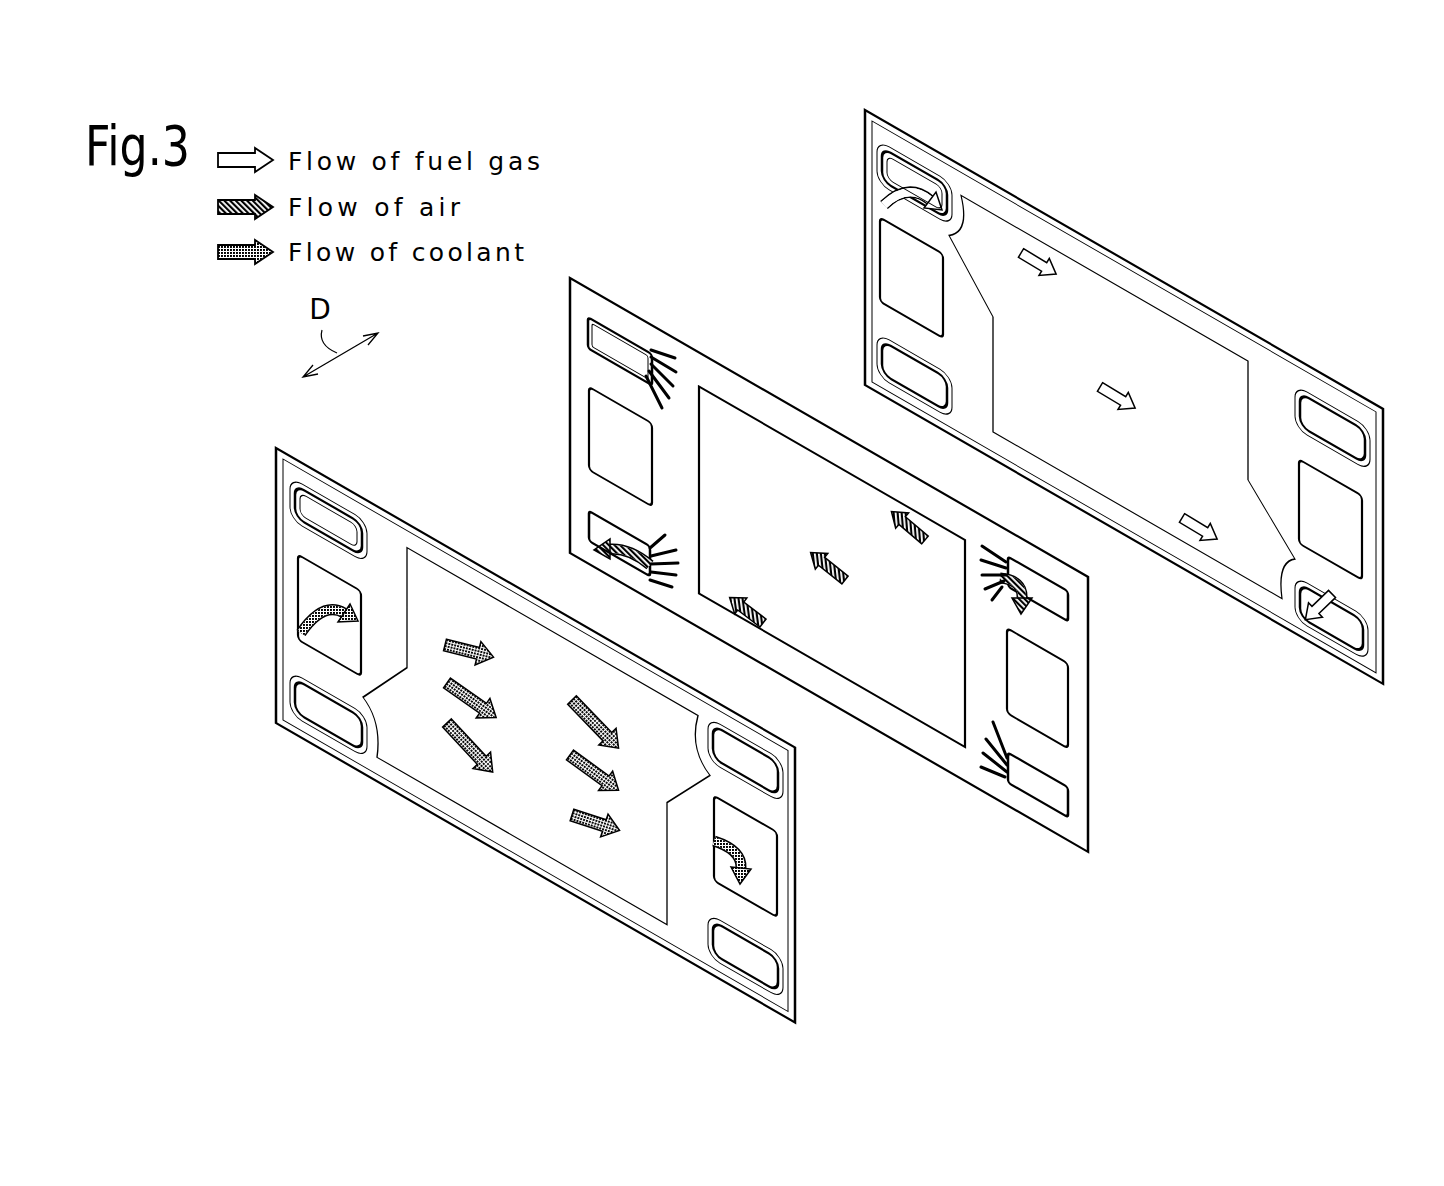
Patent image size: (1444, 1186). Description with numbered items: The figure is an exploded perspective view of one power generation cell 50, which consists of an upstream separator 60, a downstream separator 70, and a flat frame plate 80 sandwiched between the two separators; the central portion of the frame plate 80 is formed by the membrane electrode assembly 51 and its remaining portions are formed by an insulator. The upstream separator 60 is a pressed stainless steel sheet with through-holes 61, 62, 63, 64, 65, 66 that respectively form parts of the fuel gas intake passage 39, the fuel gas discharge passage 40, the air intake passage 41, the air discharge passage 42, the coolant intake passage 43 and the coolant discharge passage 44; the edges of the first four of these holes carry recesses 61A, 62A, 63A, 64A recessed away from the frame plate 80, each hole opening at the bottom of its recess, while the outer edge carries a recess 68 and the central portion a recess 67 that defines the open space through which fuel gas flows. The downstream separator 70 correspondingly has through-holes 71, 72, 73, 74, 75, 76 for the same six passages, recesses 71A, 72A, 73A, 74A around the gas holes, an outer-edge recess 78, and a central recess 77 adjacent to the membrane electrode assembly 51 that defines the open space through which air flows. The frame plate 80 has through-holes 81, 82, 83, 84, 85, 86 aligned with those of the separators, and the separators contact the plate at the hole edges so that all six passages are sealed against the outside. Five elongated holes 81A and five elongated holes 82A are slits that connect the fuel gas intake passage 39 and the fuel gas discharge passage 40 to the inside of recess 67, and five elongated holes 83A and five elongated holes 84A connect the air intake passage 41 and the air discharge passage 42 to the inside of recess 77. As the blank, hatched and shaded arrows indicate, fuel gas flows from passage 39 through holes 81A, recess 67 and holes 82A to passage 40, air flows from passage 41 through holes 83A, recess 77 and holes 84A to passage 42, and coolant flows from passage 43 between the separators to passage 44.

The power generation cell 50 is at (824, 564).
The upstream separator 60 is at (1117, 514).
The downstream separator 70 is at (675, 729).
The frame plate 80 is at (861, 609).
The membrane electrode assembly 51 is at (905, 700).
The fuel gas intake passage 39 is at (302, 506).
The coolant intake passage 43 is at (309, 575).
The air discharge passage 42 is at (343, 723).
The air intake passage 41 is at (766, 770).
The coolant discharge passage 44 is at (761, 840).
The fuel gas discharge passage 40 is at (740, 951).
The through-hole 61 is at (874, 166).
The recess 61A is at (880, 157).
The through-hole 62 is at (1369, 625).
The recess 62A is at (1368, 655).
The through-hole 63 is at (1316, 386).
The recess 63A is at (1291, 385).
The through-hole 64 is at (887, 376).
The recess 64A is at (881, 352).
The through-hole 65 is at (882, 277).
The through-hole 66 is at (1355, 548).
The recess 67 is at (1133, 315).
The recess 68 is at (1024, 206).
The through-hole 71 is at (287, 500).
The recess 71A is at (293, 493).
The through-hole 72 is at (785, 957).
The recess 72A is at (775, 985).
The through-hole 73 is at (742, 731).
The recess 73A is at (730, 718).
The through-hole 74 is at (285, 731).
The recess 74A is at (295, 693).
The through-hole 75 is at (297, 600).
The through-hole 76 is at (770, 880).
The recess 77 is at (520, 805).
The recess 78 is at (405, 527).
The through-hole 81 is at (612, 330).
The elongated holes 81A is at (665, 352).
The through-hole 82 is at (1062, 793).
The elongated holes 82A is at (988, 775).
The through-hole 83 is at (1045, 585).
The elongated holes 83A is at (988, 546).
The through-hole 84 is at (592, 540).
The elongated holes 84A is at (660, 585).
The through-hole 85 is at (600, 465).
The through-hole 86 is at (1060, 718).